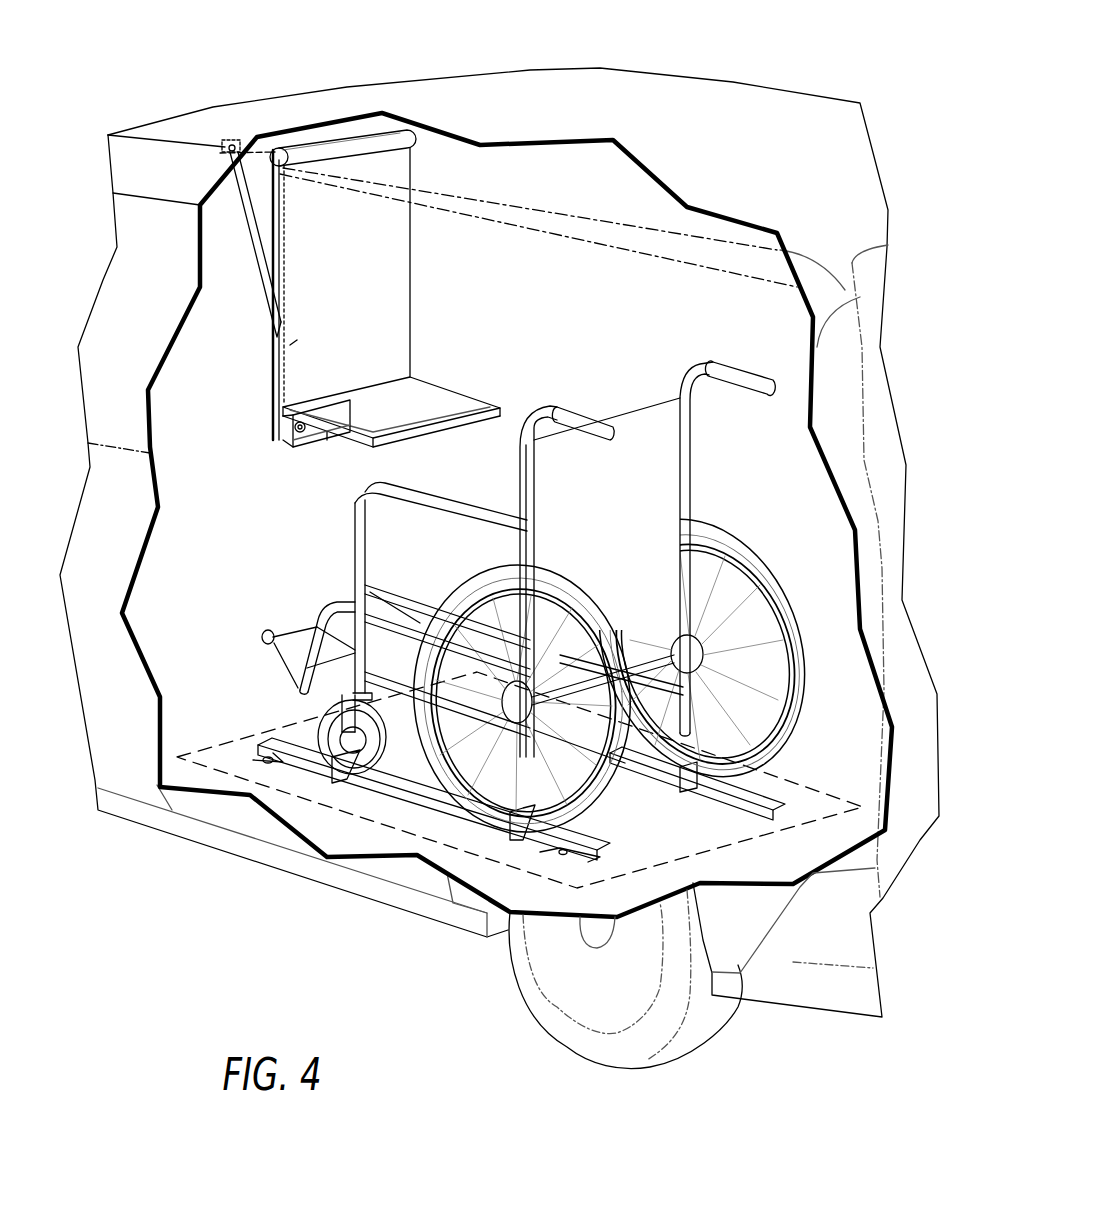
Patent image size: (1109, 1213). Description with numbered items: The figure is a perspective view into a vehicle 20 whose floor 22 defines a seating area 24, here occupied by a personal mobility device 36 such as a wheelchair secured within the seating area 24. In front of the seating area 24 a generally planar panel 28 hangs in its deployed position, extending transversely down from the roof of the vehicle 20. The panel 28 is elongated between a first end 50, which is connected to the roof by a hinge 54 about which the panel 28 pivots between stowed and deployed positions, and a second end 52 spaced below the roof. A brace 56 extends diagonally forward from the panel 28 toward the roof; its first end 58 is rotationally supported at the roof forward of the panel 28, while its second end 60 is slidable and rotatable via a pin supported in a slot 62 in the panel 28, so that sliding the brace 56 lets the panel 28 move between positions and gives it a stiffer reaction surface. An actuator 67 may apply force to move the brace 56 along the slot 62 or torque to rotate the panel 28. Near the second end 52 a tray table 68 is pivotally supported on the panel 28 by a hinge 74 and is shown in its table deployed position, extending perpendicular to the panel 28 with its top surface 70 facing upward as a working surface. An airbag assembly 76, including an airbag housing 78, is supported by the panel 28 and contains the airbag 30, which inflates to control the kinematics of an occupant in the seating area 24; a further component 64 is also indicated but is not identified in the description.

The vehicle 20 is at (733, 103).
The floor 22 is at (345, 827).
The seating area 24 is at (227, 773).
The panel 28 is at (398, 218).
The airbag 30 is at (327, 440).
The personal mobility device 36 is at (467, 500).
The first end 50 is at (389, 99).
The second end 52 is at (275, 465).
The hinge 54 is at (343, 147).
The brace 56 is at (207, 195).
The first end 58 is at (225, 142).
The second end 60 is at (275, 333).
The slot 62 is at (309, 295).
The pivot mount 64 is at (220, 153).
The actuator 67 is at (287, 253).
The tray table 68 is at (290, 345).
The top surface 70 is at (358, 377).
The hinge 74 is at (330, 392).
The airbag assembly 76 is at (307, 452).
The airbag housing 78 is at (290, 447).